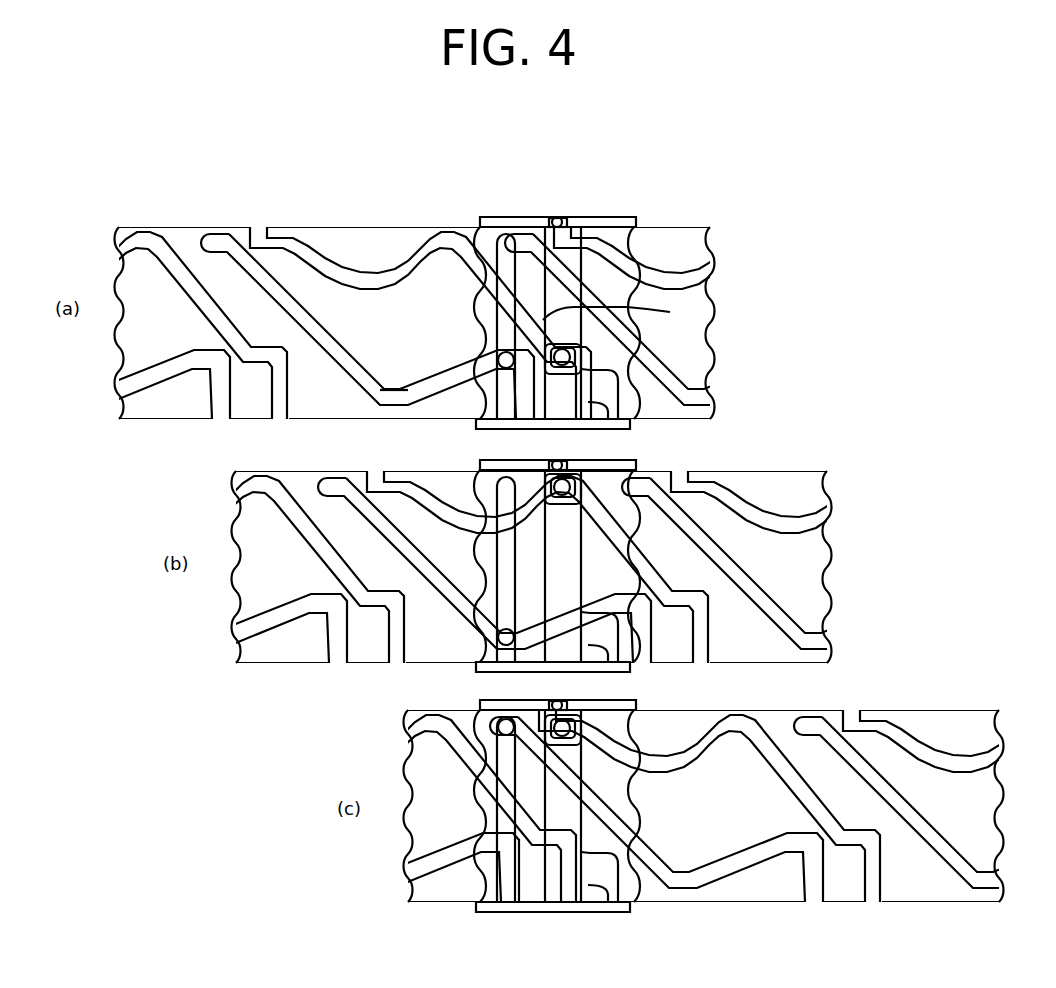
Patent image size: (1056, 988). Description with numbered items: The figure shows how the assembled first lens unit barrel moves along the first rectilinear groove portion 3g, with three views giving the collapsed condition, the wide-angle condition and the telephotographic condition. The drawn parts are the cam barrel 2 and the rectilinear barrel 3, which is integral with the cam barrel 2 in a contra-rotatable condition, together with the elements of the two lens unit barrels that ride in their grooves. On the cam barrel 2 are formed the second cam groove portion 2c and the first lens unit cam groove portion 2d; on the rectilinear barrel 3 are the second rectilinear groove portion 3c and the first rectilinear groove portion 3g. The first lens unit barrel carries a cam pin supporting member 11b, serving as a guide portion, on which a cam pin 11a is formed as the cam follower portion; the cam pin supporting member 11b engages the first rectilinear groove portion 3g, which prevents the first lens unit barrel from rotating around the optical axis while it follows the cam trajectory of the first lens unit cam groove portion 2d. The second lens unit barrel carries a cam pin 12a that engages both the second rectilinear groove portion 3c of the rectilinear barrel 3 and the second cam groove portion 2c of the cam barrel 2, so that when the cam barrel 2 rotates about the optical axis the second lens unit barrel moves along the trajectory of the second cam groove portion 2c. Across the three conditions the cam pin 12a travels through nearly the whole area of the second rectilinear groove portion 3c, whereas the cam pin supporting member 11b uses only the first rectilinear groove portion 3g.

The cam barrel 2 is at (447, 318).
The second cam groove portion 2c is at (652, 364).
The first lens unit cam groove portion 2d is at (695, 279).
The rectilinear barrel 3 is at (595, 315).
The second rectilinear groove portion 3c is at (385, 388).
The first rectilinear groove portion 3g is at (653, 319).
The cam pin 11a is at (561, 401).
The cam pin supporting member 11b is at (608, 413).
The cam pin 12a is at (471, 406).